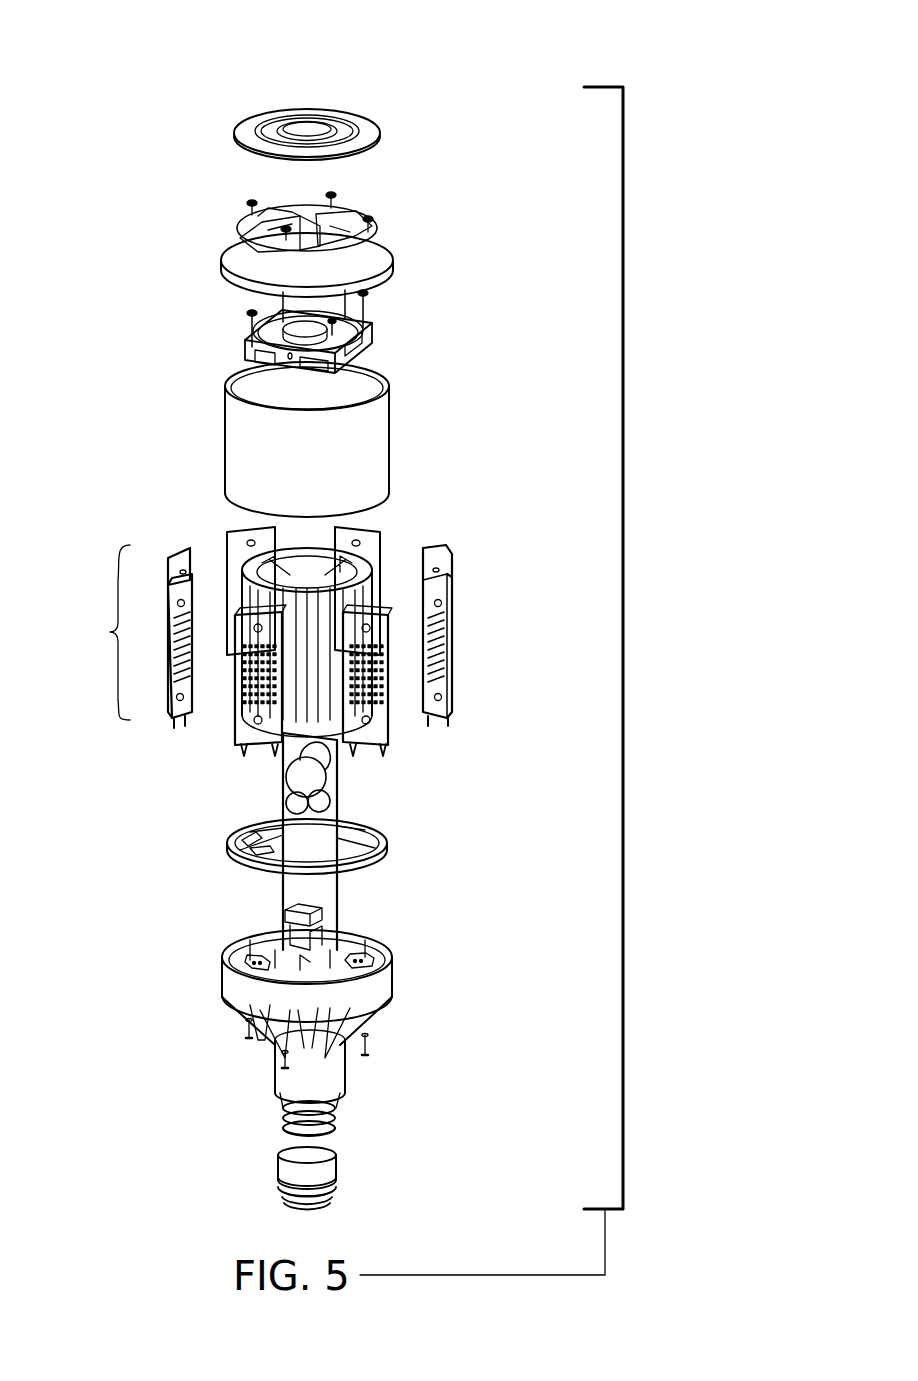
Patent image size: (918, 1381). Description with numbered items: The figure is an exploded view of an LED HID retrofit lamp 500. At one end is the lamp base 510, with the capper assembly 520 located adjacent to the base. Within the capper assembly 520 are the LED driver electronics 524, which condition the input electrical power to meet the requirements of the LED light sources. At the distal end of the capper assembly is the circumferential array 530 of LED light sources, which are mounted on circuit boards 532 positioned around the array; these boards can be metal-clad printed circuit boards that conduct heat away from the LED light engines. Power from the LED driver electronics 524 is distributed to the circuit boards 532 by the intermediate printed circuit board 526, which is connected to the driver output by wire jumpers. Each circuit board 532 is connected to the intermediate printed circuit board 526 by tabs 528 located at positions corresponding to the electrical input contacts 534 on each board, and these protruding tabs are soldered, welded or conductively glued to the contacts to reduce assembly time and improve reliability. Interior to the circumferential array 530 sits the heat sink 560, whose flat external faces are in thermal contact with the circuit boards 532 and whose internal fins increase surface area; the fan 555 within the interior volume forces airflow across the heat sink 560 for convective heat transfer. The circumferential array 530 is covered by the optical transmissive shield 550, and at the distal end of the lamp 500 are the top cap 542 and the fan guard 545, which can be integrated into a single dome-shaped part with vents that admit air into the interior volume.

The LED HID retrofit lamp 500 is at (148, 68).
The lamp base 510 is at (322, 1170).
The capper assembly 520 is at (377, 985).
The LED driver electronics 524 is at (327, 765).
The intermediate printed circuit board 526 is at (380, 847).
The tab 528 is at (268, 852).
The circumferential array 530 is at (93, 632).
The circuit board 532 is at (447, 713).
The electrical input contact 534 is at (300, 747).
The top cap 542 is at (352, 235).
The fan guard 545 is at (372, 133).
The optical transmissive shield 550 is at (372, 453).
The fan 555 is at (372, 333).
The heat sink 560 is at (395, 605).